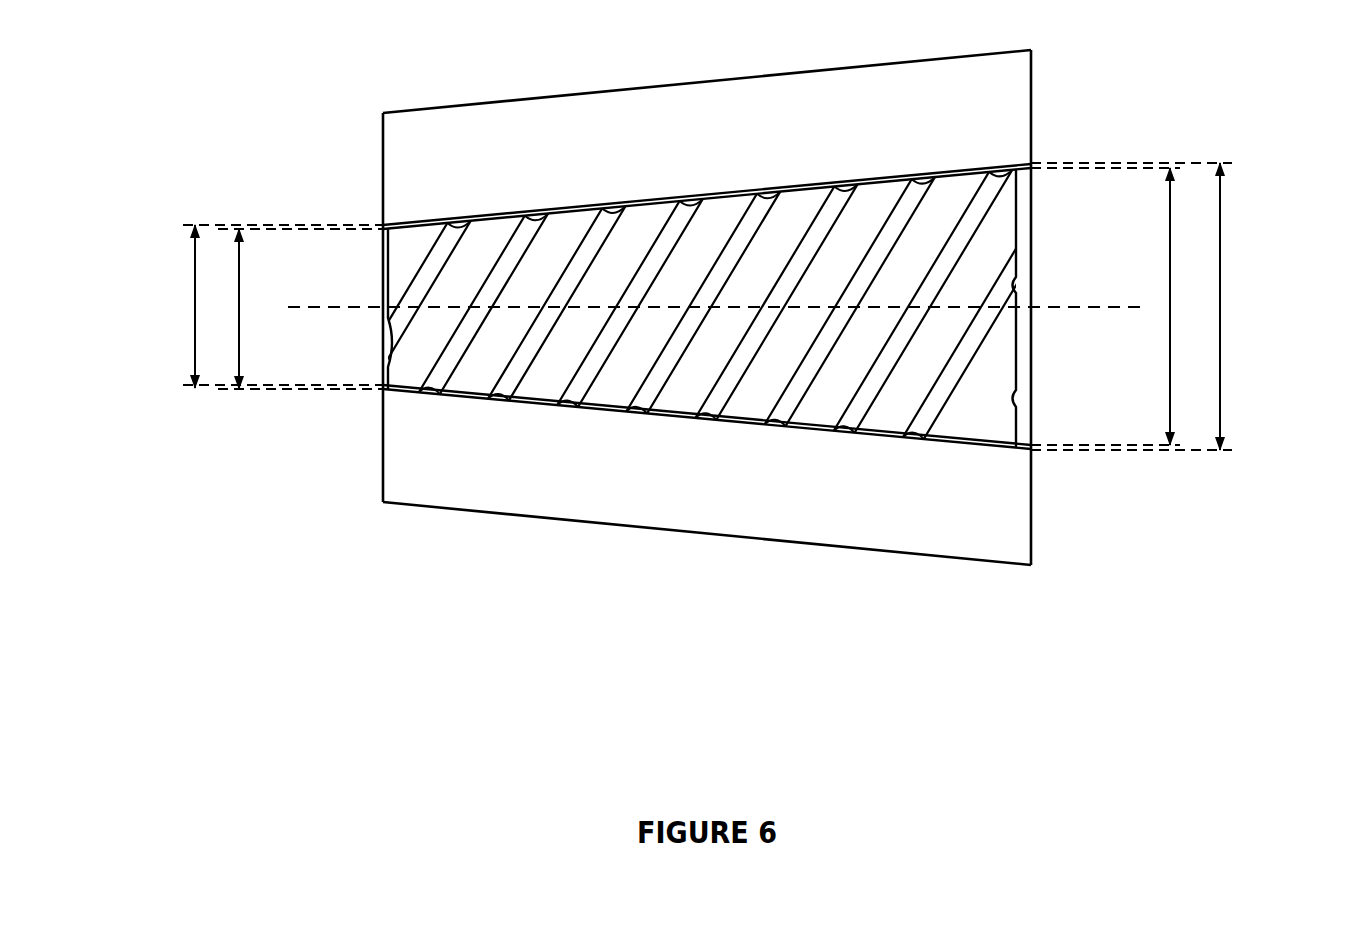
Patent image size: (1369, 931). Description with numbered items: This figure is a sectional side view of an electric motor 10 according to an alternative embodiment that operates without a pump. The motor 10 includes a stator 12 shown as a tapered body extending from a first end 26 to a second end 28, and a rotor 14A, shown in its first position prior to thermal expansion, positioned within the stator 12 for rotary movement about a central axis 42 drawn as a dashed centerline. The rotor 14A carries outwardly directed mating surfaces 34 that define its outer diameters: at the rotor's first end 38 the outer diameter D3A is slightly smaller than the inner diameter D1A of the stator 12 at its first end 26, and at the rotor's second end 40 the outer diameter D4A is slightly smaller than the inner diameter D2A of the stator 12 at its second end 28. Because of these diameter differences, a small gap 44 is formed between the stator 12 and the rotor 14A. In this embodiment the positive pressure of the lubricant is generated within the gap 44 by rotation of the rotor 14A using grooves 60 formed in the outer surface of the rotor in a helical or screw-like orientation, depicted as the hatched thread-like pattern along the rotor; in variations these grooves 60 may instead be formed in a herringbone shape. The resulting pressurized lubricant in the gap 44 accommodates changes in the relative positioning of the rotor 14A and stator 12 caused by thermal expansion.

The motor 10 is at (618, 305).
The stator 12 is at (719, 307).
The rotor 14A is at (709, 300).
The first end 26 is at (383, 187).
The second end 28 is at (1033, 110).
The mating surfaces 34 is at (402, 393).
The first end 38 is at (383, 265).
The second end 40 is at (1017, 236).
The central axis 42 is at (330, 308).
The gap 44 is at (698, 306).
The grooves 60 is at (602, 235).
The inner diameter D1A is at (193, 282).
The outer diameter D3A is at (238, 362).
The inner diameter D2A is at (1222, 198).
The outer diameter D4A is at (1170, 355).